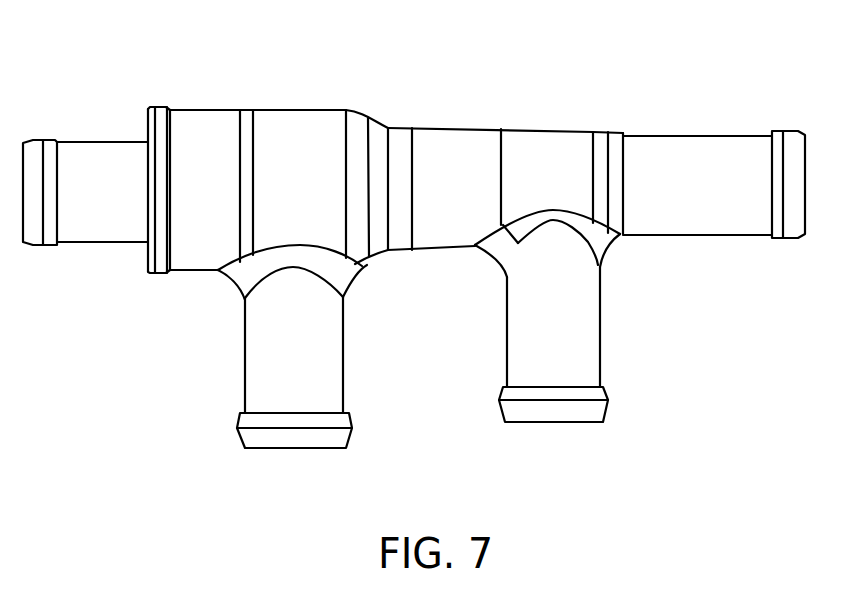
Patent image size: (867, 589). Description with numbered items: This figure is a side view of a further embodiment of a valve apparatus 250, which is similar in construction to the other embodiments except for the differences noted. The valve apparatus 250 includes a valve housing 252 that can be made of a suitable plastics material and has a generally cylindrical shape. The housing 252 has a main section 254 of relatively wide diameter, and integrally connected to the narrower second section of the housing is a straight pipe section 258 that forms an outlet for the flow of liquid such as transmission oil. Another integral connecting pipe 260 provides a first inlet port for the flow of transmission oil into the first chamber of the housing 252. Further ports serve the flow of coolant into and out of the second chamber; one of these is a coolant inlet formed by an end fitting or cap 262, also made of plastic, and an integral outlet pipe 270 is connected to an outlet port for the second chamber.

The valve apparatus 250 is at (440, 92).
The valve housing 252 is at (467, 150).
The main section 254 is at (315, 108).
The straight pipe section 258 is at (668, 135).
The connecting pipe 260 is at (575, 323).
The end fitting or cap 262 is at (102, 180).
The outlet pipe 270 is at (268, 345).